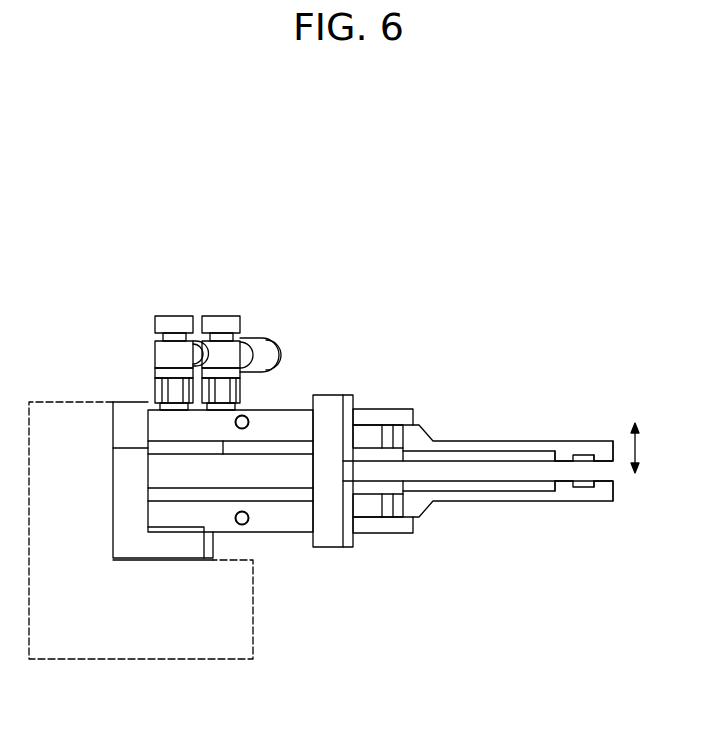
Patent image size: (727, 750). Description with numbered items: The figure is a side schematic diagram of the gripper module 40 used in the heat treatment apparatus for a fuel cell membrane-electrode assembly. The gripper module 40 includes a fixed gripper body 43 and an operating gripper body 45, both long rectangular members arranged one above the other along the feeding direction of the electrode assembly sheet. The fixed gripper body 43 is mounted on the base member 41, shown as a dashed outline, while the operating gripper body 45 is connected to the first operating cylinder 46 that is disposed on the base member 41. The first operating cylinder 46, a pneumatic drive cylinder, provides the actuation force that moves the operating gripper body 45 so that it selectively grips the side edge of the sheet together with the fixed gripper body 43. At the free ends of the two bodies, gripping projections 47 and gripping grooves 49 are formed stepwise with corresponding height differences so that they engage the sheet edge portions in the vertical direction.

The gripper module 40 is at (380, 267).
The base member 41 is at (186, 630).
The fixed gripper body 43 is at (508, 501).
The operating gripper body 45 is at (511, 441).
The first operating cylinder 46 is at (281, 418).
The gripping projection 47 is at (603, 455).
The gripping groove 49 is at (580, 456).